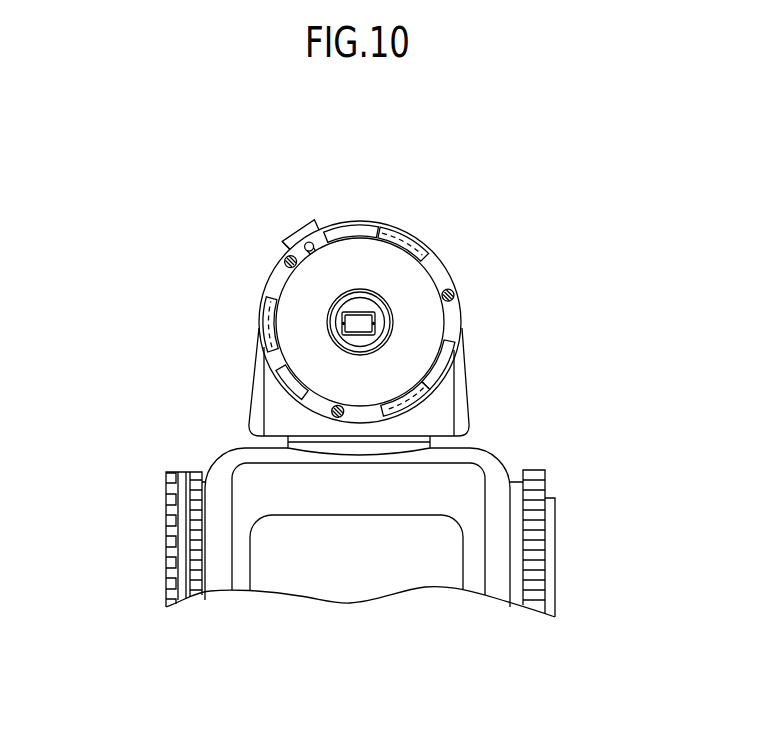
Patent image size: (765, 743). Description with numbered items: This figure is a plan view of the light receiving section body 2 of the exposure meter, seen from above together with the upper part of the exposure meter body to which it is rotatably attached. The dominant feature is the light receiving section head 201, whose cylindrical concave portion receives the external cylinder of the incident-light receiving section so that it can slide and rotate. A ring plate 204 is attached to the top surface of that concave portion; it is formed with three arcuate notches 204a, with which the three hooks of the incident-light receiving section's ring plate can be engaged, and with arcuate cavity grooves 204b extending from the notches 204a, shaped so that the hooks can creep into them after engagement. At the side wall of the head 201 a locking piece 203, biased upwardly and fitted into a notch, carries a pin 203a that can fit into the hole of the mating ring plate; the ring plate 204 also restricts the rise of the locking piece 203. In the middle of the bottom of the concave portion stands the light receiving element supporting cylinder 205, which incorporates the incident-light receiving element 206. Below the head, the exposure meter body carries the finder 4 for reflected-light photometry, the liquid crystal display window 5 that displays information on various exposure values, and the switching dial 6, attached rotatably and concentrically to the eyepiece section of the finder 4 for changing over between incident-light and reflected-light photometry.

The light receiving section body 2 is at (250, 288).
The light receiving section head 201 is at (438, 404).
The locking piece 203 is at (298, 232).
The pin 203a is at (282, 248).
The ring plate 204 is at (442, 259).
The arcuate notches 204a is at (352, 234).
The arcuate cavity grooves 204b is at (412, 230).
The light receiving element supporting cylinder 205 is at (360, 356).
The incident-light receiving element 206 is at (358, 322).
The finder 4 is at (166, 525).
The liquid crystal display window 5 is at (374, 572).
The switching dial 6 is at (538, 536).